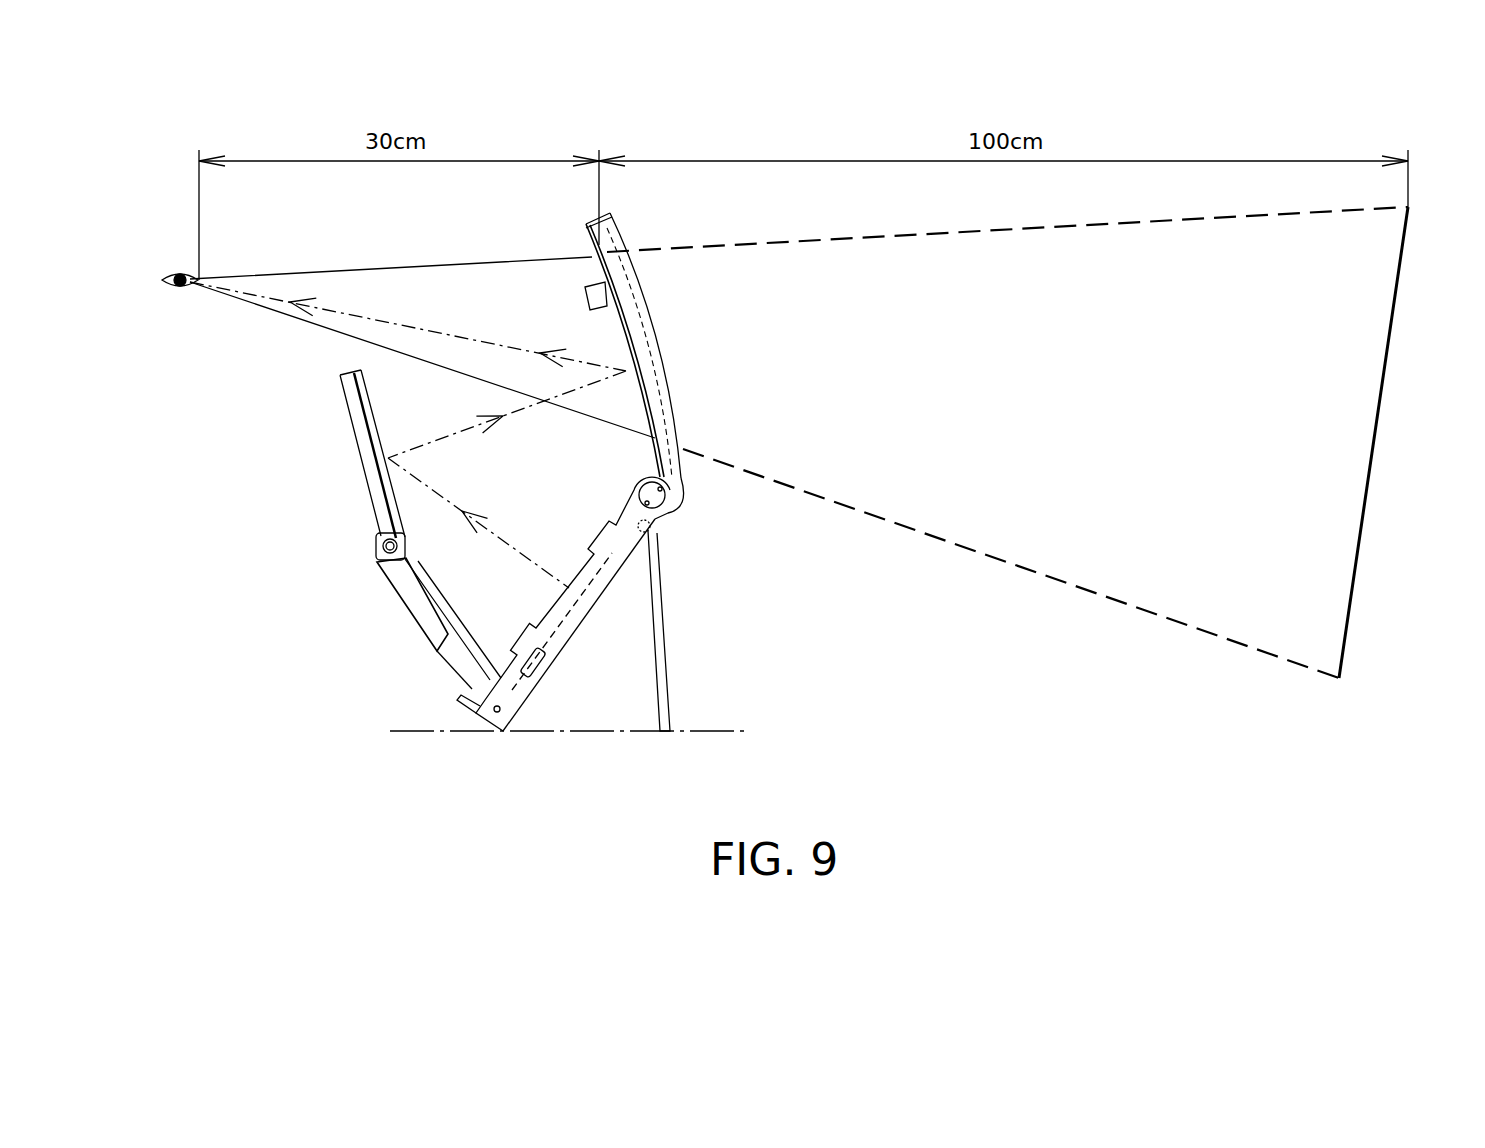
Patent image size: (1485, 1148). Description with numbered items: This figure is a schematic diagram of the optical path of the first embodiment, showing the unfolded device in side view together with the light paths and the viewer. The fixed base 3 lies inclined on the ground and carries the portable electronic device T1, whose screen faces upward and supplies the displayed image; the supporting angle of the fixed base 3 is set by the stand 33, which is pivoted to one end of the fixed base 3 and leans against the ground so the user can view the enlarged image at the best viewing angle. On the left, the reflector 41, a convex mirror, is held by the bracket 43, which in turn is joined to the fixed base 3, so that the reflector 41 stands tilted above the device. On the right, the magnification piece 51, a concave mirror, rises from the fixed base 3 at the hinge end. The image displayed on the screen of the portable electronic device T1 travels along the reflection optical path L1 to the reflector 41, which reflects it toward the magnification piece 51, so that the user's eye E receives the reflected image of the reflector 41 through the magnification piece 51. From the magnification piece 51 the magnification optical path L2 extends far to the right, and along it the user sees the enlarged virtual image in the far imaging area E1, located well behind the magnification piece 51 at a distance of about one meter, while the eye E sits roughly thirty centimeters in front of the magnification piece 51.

The fixed base 3 is at (580, 623).
The stand 33 is at (667, 628).
The reflector 41 is at (363, 462).
The bracket 43 is at (440, 668).
The magnification piece 51 is at (636, 326).
The user's eye E is at (173, 290).
The far imaging area E1 is at (1362, 512).
The reflection optical path L1 is at (472, 430).
The magnification optical path L2 is at (878, 240).
The portable electronic device T1 is at (560, 597).